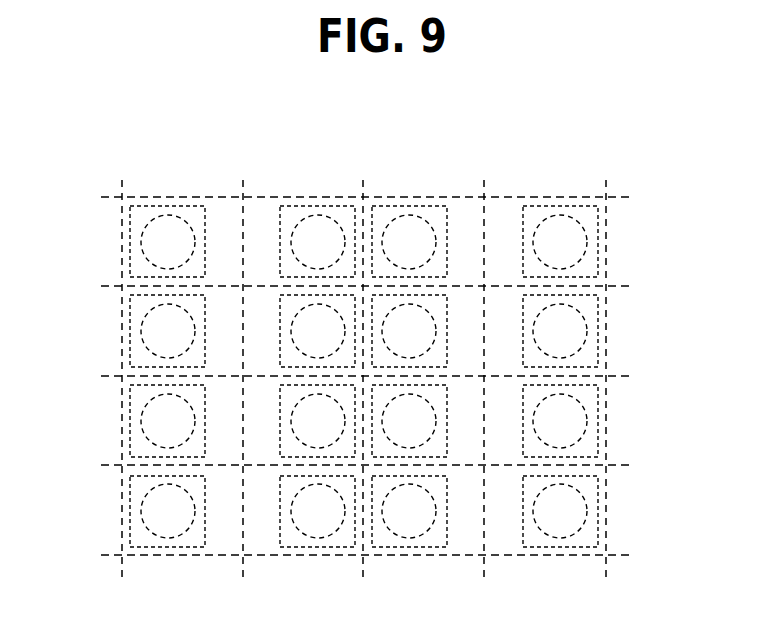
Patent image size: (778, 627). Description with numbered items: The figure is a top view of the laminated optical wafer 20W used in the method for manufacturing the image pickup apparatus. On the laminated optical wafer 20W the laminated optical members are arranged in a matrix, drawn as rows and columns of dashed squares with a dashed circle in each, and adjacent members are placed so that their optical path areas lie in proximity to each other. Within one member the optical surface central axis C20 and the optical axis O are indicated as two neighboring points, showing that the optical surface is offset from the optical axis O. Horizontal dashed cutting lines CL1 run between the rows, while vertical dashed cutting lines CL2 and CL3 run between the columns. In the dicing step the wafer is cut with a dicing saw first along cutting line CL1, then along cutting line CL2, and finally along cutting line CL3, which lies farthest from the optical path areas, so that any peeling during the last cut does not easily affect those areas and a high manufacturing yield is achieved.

The laminated optical wafer 20W is at (654, 163).
The cutting line CL1 is at (336, 377).
The cutting line CL2 is at (364, 362).
The cutting line CL3 is at (363, 362).
The optical surface central axis C20 is at (303, 242).
The optical axis O is at (318, 242).